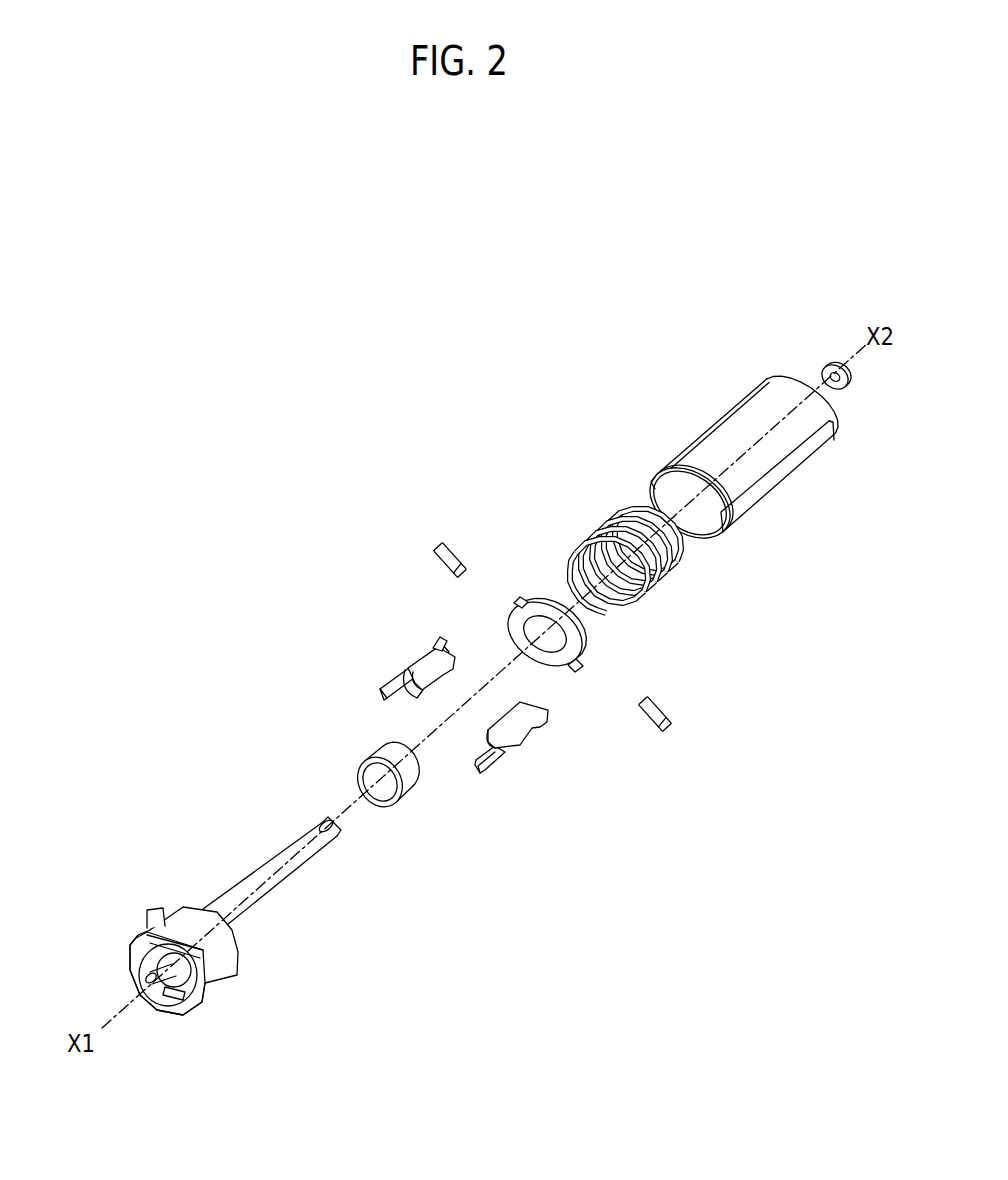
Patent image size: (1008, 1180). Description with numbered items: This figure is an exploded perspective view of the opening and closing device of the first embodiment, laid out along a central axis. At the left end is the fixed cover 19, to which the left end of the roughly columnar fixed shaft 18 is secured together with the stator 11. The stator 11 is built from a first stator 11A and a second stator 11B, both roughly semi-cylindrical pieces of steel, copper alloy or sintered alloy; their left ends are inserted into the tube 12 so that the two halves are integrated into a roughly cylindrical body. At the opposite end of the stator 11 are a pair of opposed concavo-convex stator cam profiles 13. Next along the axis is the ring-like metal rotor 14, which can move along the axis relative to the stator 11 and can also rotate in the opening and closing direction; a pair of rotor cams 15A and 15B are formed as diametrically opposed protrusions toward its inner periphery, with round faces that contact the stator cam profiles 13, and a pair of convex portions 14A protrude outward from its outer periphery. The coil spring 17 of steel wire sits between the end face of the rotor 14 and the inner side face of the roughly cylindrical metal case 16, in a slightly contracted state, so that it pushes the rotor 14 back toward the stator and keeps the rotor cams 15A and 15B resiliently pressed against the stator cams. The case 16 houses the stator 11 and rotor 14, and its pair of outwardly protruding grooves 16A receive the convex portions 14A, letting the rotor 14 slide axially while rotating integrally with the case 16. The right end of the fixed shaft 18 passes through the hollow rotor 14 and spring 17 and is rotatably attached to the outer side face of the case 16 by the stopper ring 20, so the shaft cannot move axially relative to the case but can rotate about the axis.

The stator 11 is at (497, 760).
The first stator 11A is at (405, 665).
The second stator 11B is at (520, 723).
The tube 12 is at (377, 747).
The stator cam profiles 13 is at (433, 637).
The rotor 14 is at (580, 640).
The convex portions 14A is at (521, 597).
The rotor cam 15A is at (670, 722).
The rotor cam 15B is at (438, 545).
The case 16 is at (793, 477).
The grooves 16A is at (743, 507).
The coil spring 17 is at (602, 537).
The fixed shaft 18 is at (282, 852).
The fixed cover 19 is at (238, 942).
The stopper ring 20 is at (826, 362).